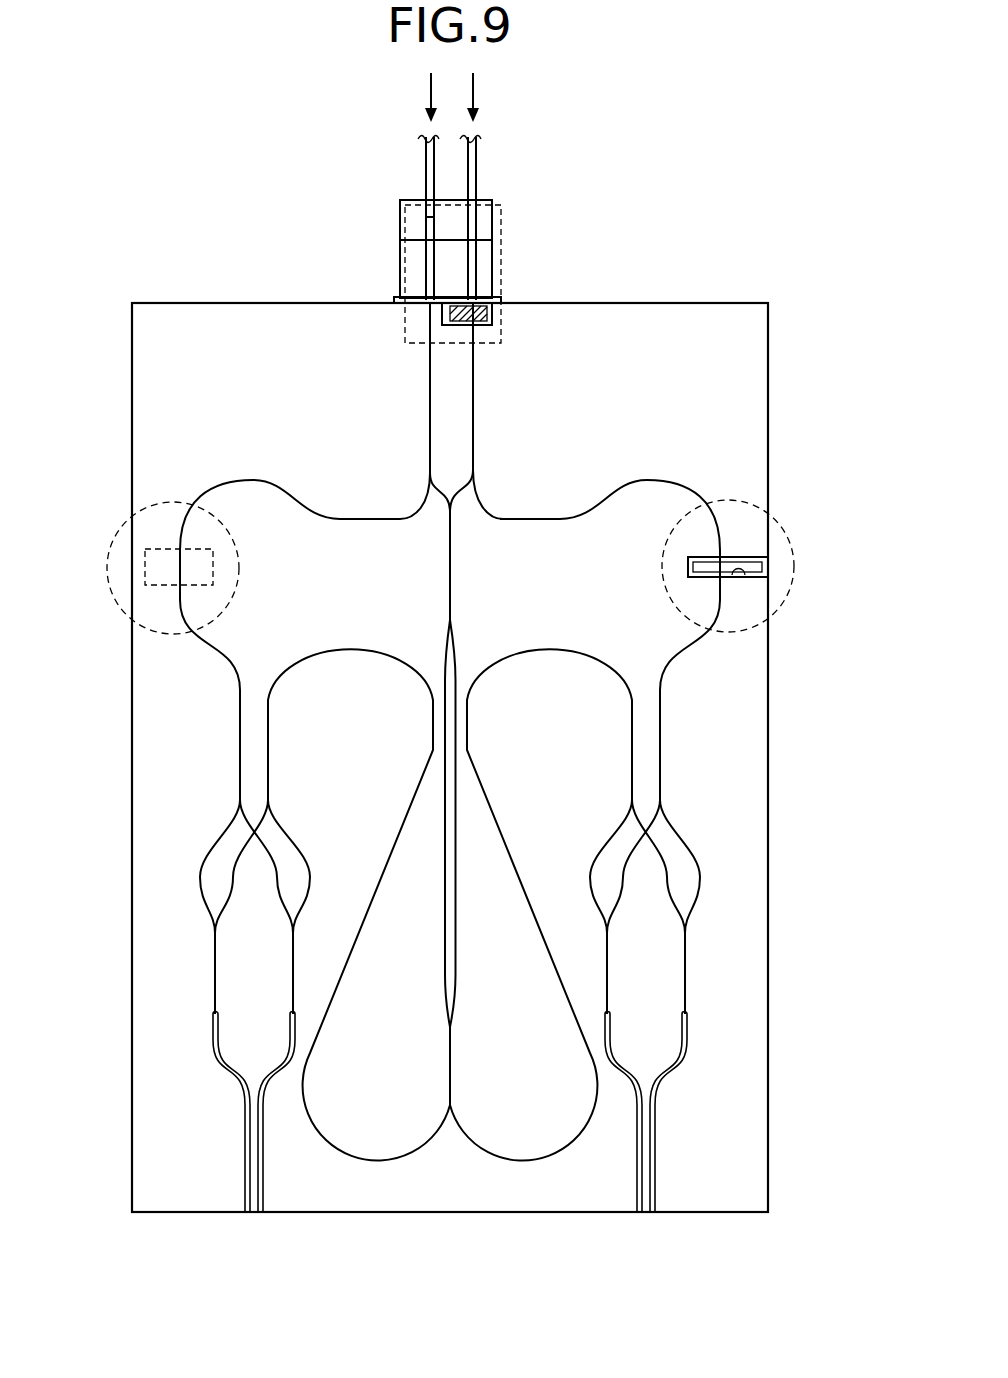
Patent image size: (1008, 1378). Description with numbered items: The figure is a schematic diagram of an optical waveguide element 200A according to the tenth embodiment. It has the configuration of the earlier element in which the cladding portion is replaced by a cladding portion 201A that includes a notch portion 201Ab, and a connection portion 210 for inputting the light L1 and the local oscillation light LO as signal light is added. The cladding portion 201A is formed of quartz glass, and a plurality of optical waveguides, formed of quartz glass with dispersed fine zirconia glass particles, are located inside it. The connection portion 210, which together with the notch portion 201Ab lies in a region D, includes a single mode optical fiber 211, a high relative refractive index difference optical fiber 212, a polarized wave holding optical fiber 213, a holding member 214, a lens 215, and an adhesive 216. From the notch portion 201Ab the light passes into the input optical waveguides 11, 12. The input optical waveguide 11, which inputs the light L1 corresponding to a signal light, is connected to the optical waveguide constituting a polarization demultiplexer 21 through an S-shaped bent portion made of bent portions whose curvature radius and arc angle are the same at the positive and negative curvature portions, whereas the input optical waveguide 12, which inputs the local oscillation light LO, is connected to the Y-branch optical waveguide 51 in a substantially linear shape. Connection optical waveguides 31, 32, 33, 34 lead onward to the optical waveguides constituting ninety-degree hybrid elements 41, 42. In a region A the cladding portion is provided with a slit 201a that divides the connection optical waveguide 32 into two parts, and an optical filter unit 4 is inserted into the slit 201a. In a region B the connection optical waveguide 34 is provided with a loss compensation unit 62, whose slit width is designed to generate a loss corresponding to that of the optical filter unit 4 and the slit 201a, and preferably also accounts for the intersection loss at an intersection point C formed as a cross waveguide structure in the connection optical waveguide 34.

The optical waveguide element 200A is at (840, 194).
The cladding portion 201A is at (705, 303).
The notch portion 201Ab is at (493, 318).
The slit 201a is at (742, 576).
The connection portion 210 is at (468, 244).
The single mode optical fiber 211 is at (426, 150).
The high relative refractive index difference optical fiber 212 is at (426, 262).
The polarized wave holding optical fiber 213 is at (477, 259).
The holding member 214 is at (400, 205).
The lens 215 is at (492, 312).
The adhesive 216 is at (394, 300).
The region D is at (405, 220).
The light L1 is at (431, 92).
The local oscillation light LO is at (473, 92).
The input optical waveguide 11 is at (430, 396).
The input optical waveguide 12 is at (473, 397).
The Y-branch optical waveguide 51 is at (471, 472).
The intersection point C is at (432, 498).
The connection optical waveguide 34 is at (215, 468).
The connection optical waveguide 32 is at (686, 465).
The region B is at (130, 520).
The region A is at (770, 515).
The loss compensation unit 62 is at (145, 574).
The optical filter unit 4 is at (758, 566).
The polarization demultiplexer 21 is at (468, 634).
The connection optical waveguide 33 is at (391, 898).
The connection optical waveguide 31 is at (509, 898).
The 90-degree hybrid element 42 is at (208, 805).
The 90-degree hybrid element 41 is at (690, 803).